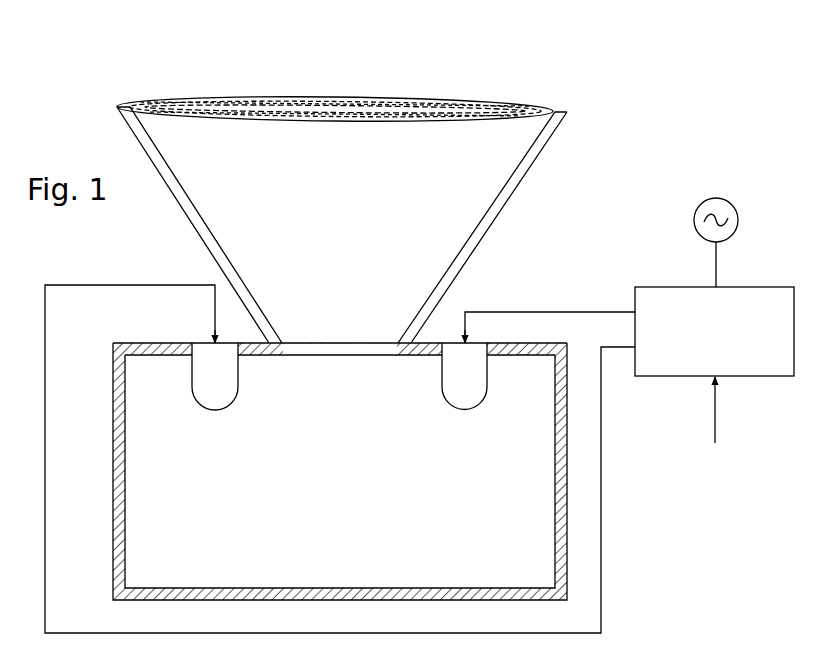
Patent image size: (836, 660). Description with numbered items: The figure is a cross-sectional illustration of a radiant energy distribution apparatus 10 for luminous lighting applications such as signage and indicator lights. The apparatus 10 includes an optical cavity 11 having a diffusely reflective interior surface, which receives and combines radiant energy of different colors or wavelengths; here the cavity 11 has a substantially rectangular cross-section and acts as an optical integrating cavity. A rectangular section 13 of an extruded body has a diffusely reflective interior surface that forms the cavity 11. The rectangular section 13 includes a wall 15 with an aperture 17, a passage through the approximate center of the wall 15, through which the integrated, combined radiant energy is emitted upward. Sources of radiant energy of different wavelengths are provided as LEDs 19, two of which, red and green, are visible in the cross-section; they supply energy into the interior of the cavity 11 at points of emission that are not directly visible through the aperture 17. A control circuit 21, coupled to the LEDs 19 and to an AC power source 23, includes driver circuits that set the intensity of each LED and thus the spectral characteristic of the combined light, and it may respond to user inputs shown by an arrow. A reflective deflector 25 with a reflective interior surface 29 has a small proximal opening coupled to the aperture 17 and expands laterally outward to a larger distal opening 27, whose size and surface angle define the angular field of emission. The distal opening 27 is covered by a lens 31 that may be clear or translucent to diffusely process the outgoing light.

The radiant energy distribution apparatus 10 is at (594, 64).
The optical cavity 11 is at (341, 478).
The rectangular section 13 is at (113, 497).
The wall 15 is at (146, 340).
The aperture 17 is at (330, 341).
The LEDs 19 is at (214, 413).
The control circuit 21 is at (763, 284).
The AC power source 23 is at (692, 217).
The reflective deflector 25 is at (481, 243).
The distal opening 27 is at (435, 104).
The reflective interior surface 29 is at (215, 243).
The lens 31 is at (323, 123).